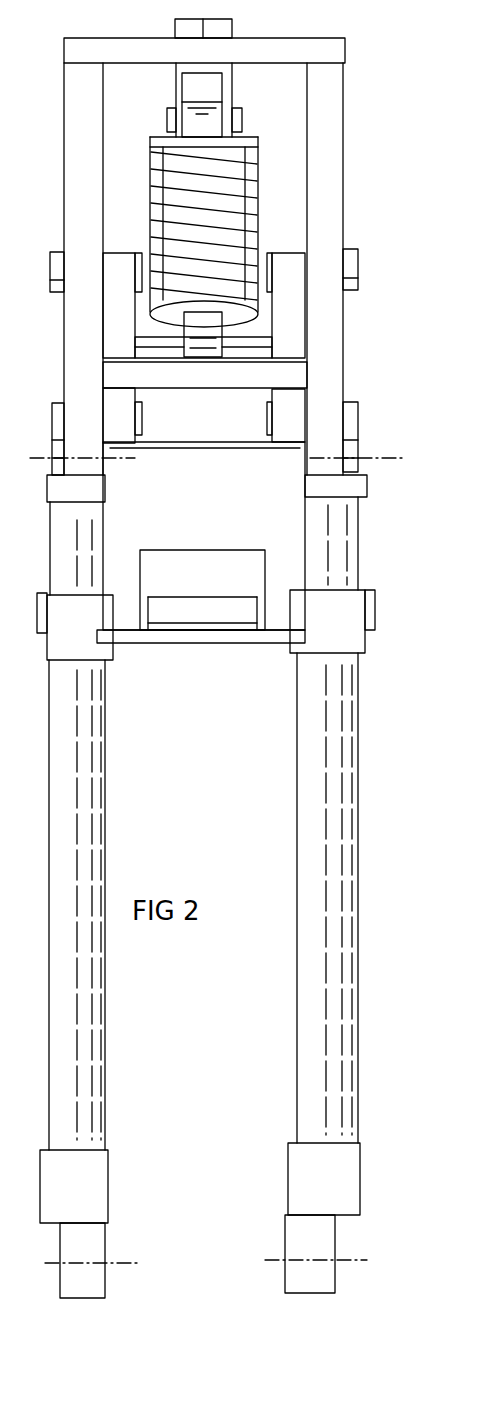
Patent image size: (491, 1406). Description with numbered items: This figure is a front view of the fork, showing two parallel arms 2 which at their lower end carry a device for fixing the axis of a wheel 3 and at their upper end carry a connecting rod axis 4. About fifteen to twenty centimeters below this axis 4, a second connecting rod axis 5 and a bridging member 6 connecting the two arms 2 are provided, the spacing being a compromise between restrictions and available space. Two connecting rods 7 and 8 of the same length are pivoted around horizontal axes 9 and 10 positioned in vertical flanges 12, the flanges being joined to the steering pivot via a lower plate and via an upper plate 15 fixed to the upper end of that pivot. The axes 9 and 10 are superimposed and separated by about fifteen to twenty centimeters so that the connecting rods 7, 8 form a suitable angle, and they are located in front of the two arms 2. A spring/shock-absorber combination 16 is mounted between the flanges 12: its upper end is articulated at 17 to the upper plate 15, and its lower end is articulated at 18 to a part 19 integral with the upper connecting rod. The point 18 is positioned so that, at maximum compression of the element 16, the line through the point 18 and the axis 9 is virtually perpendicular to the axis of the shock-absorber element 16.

The parallel arms 2 is at (65, 897).
The wheel 3 is at (50, 1263).
The connecting rod axis 4 is at (55, 402).
The second connecting rod axis 5 is at (37, 622).
The bridging member 6 is at (192, 633).
The connecting rod 7 is at (118, 420).
The connecting rod 8 is at (130, 527).
The horizontal axis 9 is at (55, 262).
The horizontal axis 10 is at (50, 458).
The vertical flanges 12 is at (77, 113).
The upper plate 15 is at (152, 48).
The spring/shock-absorber combination 16 is at (170, 185).
The upper articulation point 17 is at (193, 117).
The lower articulation point 18 is at (205, 350).
The part integral with the upper connecting rod 19 is at (118, 330).